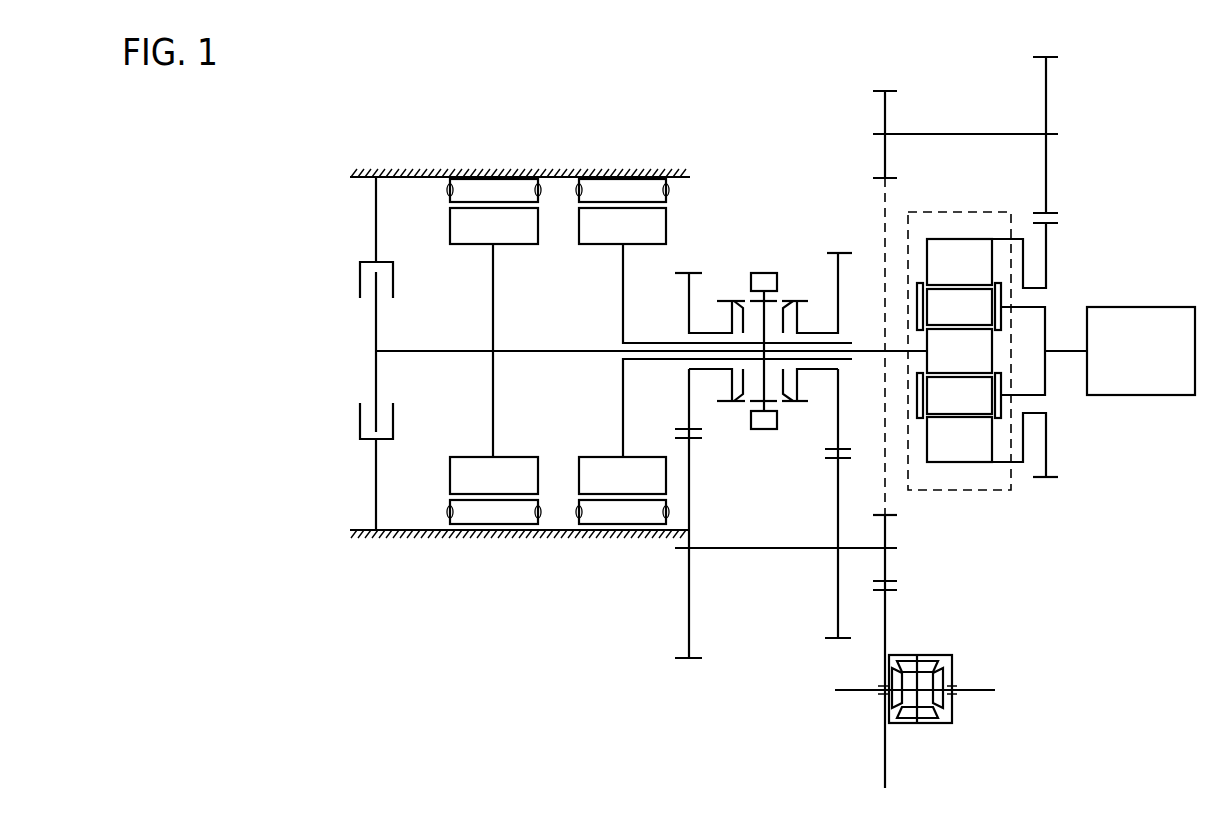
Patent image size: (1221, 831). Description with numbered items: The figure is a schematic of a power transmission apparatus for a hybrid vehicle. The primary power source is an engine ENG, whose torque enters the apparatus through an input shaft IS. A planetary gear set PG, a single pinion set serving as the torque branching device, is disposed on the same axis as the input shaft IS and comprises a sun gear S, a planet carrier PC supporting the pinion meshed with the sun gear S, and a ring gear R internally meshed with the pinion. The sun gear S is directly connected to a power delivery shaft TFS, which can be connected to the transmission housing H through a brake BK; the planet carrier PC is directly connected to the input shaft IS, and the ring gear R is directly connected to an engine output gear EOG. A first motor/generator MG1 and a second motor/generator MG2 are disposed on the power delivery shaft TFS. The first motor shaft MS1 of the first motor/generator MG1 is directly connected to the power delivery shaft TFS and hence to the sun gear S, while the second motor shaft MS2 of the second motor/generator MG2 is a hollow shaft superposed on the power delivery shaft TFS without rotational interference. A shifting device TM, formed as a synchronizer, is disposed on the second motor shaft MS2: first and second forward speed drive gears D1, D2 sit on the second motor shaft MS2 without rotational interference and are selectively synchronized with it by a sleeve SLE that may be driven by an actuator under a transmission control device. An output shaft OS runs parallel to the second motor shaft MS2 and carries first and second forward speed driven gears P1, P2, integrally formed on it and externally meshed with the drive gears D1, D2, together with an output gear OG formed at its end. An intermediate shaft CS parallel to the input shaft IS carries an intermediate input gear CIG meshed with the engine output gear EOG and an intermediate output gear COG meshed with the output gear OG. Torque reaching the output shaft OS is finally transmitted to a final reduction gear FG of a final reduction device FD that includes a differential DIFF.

The transmission housing H is at (441, 173).
The brake BK is at (358, 263).
The power delivery shaft TFS is at (425, 354).
The first motor/generator MG1 is at (543, 214).
The second motor/generator MG2 is at (676, 214).
The first motor shaft MS1 is at (493, 313).
The second motor shaft MS2 is at (643, 362).
The shifting device TM is at (790, 214).
The first forward speed drive gear D1 is at (690, 297).
The sleeve SLE is at (763, 271).
The second forward speed drive gear D2 is at (838, 277).
The first forward speed driven gear P1 is at (690, 615).
The second forward speed driven gear P2 is at (837, 611).
The output shaft OS is at (755, 550).
The intermediate output gear COG is at (886, 110).
The intermediate shaft CS is at (991, 133).
The intermediate input gear CIG is at (1047, 88).
The engine output gear EOG is at (1047, 258).
The planetary gear set PG is at (968, 207).
The ring gear R is at (935, 440).
The planet carrier PC is at (918, 400).
The sun gear S is at (937, 358).
The input shaft IS is at (1068, 354).
The engine ENG is at (1141, 351).
The output gear OG is at (898, 531).
The final reduction gear FG is at (887, 621).
The final reduction device FD is at (966, 618).
The differential DIFF is at (953, 668).